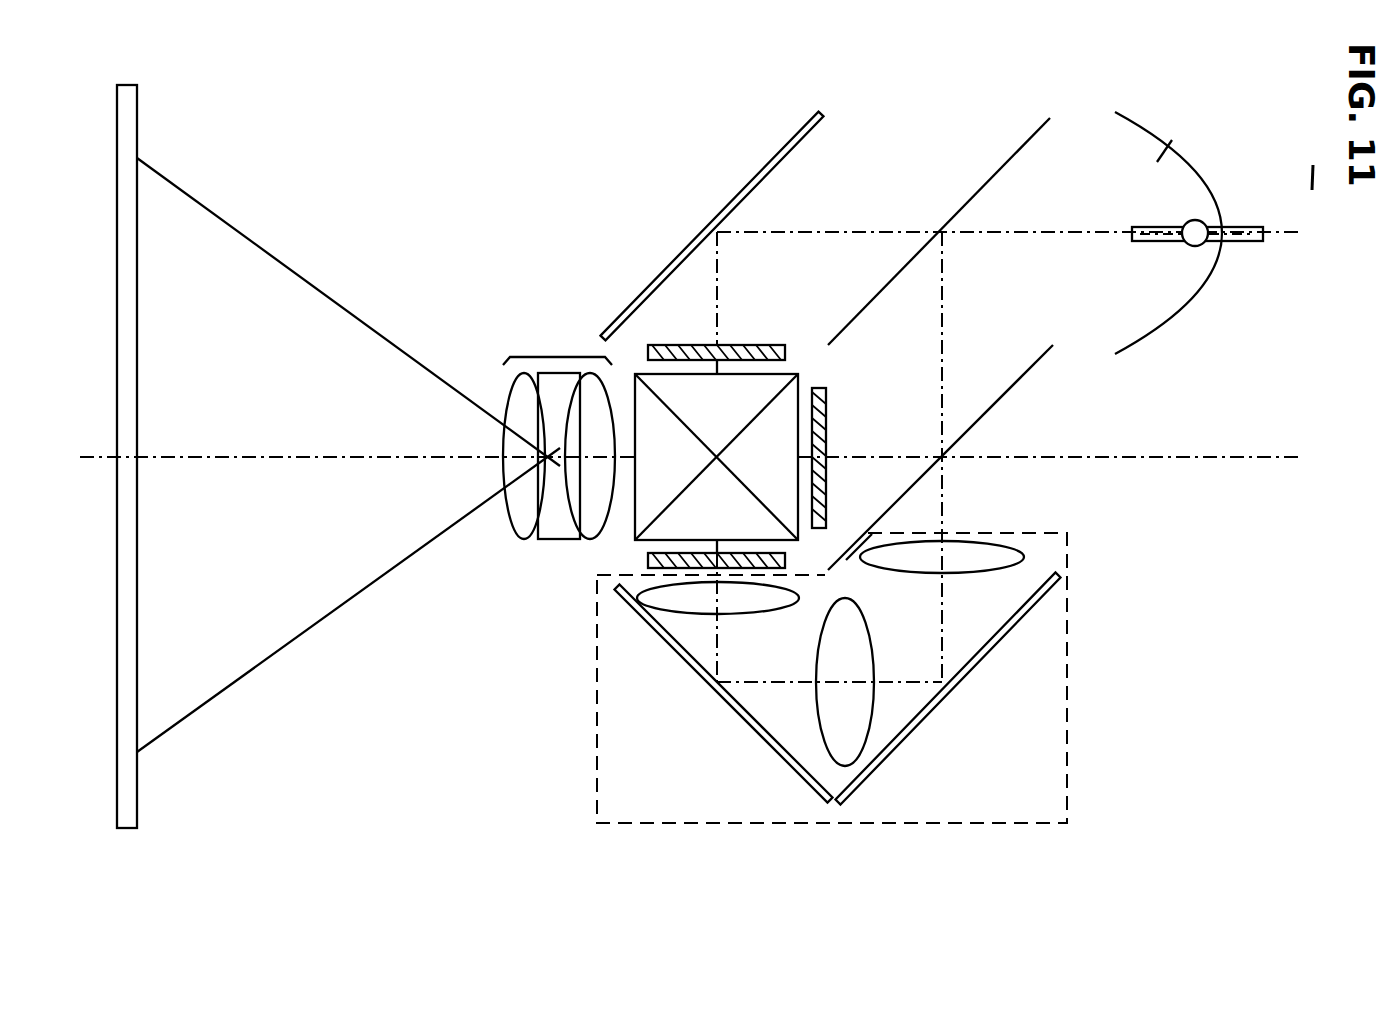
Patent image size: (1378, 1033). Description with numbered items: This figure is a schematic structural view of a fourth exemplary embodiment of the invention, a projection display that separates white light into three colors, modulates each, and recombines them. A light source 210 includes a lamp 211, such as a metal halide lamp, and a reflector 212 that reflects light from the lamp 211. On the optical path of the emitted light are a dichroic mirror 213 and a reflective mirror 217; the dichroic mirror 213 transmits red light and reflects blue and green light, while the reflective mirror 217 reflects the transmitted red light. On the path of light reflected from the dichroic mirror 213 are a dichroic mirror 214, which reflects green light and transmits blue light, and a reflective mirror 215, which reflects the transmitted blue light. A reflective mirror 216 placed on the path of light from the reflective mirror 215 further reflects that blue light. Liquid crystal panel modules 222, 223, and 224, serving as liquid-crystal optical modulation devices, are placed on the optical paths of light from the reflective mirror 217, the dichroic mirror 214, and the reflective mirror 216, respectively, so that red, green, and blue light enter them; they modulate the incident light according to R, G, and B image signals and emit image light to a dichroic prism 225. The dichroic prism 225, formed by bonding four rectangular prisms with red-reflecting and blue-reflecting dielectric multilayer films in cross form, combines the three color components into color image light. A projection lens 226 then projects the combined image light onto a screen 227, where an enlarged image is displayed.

The light source 210 is at (1216, 223).
The lamp 211 is at (1198, 228).
The reflector 212 is at (1205, 295).
The dichroic mirror 213 is at (1002, 165).
The dichroic mirror 214 is at (1002, 370).
The reflective mirror 215 is at (894, 678).
The reflective mirror 216 is at (762, 742).
The reflective mirror 217 is at (758, 178).
The liquid crystal panel module 222 is at (675, 345).
The liquid crystal panel module 223 is at (818, 388).
The liquid crystal panel module 224 is at (648, 568).
The dichroic prism 225 is at (638, 538).
The projection lens 226 is at (552, 355).
The screen 227 is at (138, 717).